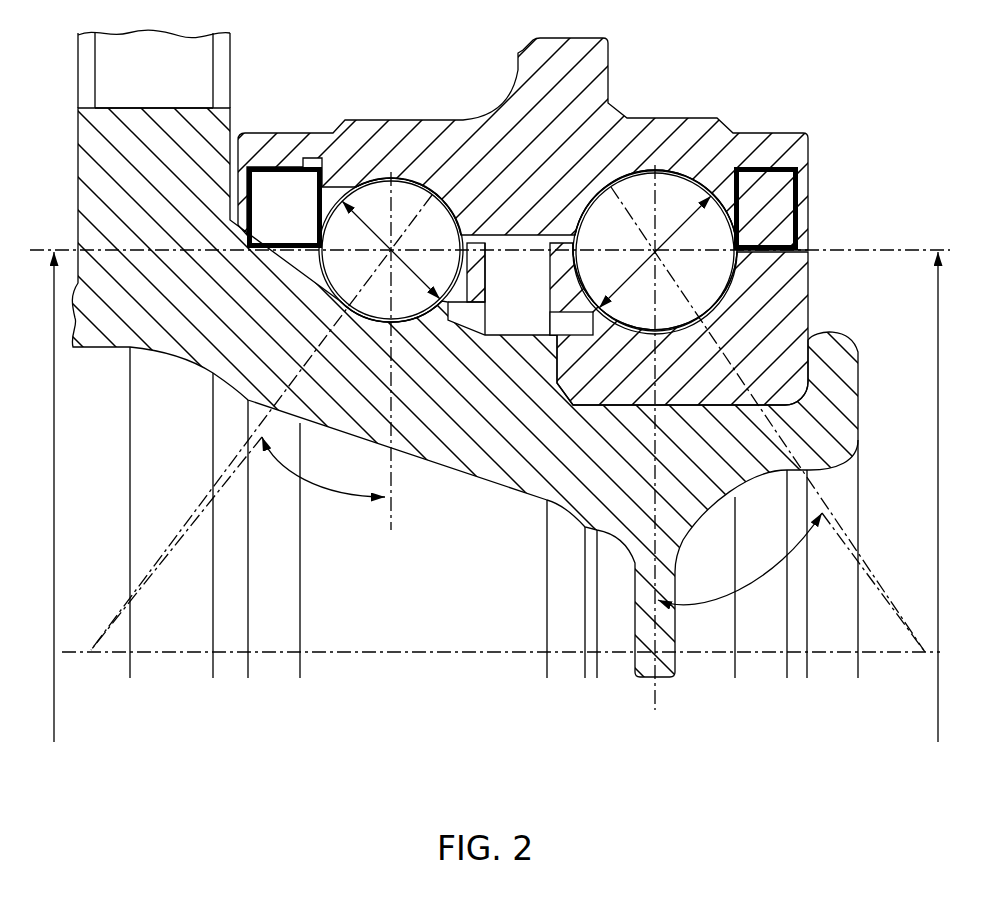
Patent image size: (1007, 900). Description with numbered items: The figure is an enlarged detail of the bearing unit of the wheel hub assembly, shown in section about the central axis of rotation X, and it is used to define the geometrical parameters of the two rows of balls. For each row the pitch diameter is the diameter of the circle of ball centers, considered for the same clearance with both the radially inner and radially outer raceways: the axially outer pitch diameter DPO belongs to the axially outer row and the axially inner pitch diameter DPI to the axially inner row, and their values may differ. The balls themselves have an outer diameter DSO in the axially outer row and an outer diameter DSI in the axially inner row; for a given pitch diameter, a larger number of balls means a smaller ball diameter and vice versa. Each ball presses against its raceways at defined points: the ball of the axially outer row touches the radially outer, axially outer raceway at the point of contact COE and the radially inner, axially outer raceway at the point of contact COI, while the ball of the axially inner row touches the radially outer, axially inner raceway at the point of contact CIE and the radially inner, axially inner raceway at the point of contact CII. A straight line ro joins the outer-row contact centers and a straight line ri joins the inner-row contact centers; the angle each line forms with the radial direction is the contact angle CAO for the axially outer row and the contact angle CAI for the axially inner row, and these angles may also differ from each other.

The point of contact between radially inner and axially outer raceway and a ball of COI is at (340, 306).
The point of contact between radially outer and axially outer raceway and a ball of COE is at (440, 190).
The point of contact between radially outer and axially inner raceway and a ball of CIE is at (609, 188).
The point of contact between radially inner and axially inner raceway and a ball of CII is at (699, 318).
The outer diameter of balls of the axially outer row DSO is at (372, 230).
The outer diameter of balls of the axially inner row DSI is at (677, 223).
The axially outer pitch diameter DPO is at (79, 497).
The axially inner pitch diameter DPI is at (917, 497).
The contact angle of the balls of the axially outer row CAO is at (323, 497).
The contact angle of the balls of the axially inner row CAI is at (708, 604).
The straight line joining the centers of pressing contact for the axially outer row ro is at (153, 570).
The straight line joining the centers of pressing contact for the axially inner row ri is at (845, 545).
The central axis of rotation X is at (928, 652).